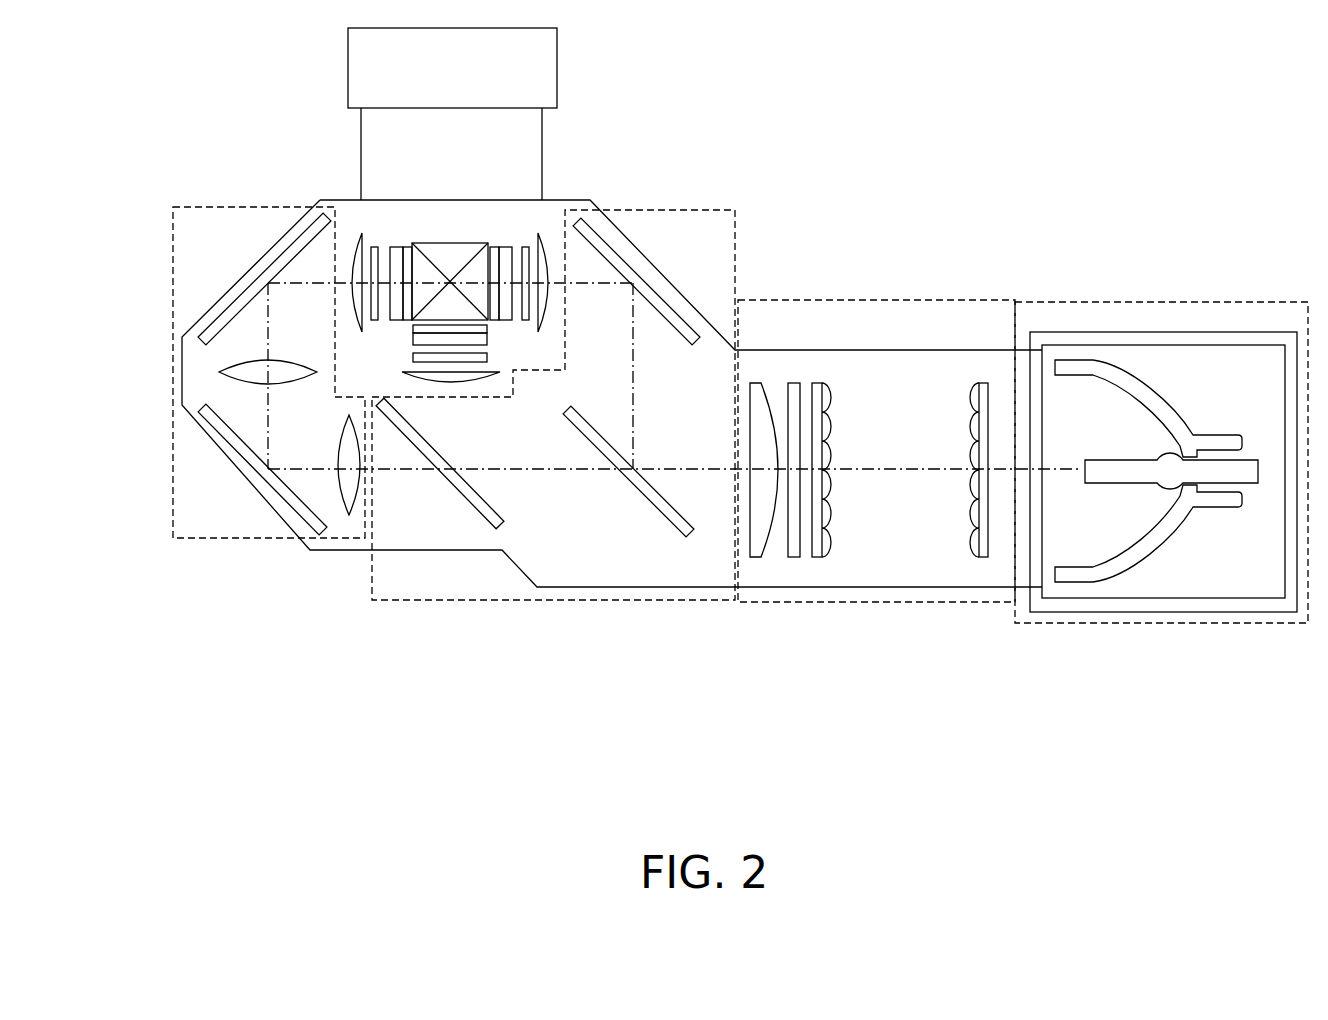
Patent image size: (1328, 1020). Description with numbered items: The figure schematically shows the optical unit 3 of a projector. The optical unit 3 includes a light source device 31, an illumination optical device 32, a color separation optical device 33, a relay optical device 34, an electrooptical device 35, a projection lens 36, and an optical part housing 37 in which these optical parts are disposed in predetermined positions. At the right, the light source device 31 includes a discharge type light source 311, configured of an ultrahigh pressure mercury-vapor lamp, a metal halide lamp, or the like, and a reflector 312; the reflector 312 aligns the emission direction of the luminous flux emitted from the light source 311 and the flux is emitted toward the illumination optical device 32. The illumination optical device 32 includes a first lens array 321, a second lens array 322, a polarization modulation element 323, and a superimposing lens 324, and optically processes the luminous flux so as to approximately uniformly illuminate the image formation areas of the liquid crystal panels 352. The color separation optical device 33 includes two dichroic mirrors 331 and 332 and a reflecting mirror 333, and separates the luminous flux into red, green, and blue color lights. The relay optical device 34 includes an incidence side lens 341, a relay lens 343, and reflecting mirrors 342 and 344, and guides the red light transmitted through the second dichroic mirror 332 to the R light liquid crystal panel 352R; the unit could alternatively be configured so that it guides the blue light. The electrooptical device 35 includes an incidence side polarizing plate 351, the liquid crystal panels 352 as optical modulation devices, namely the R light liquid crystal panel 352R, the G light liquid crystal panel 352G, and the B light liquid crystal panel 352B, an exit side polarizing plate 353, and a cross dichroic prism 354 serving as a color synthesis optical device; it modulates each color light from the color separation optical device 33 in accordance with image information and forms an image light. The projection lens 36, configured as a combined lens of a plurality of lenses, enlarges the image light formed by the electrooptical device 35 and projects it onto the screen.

The optical unit 3 is at (928, 136).
The light source device 31 is at (1050, 623).
The light source 311 is at (1132, 476).
The reflector 312 is at (1168, 524).
The illumination optical device 32 is at (875, 602).
The first lens array 321 is at (985, 385).
The second lens array 322 is at (818, 385).
The polarization modulation element 323 is at (800, 385).
The superimposing lens 324 is at (762, 385).
The color separation optical device 33 is at (583, 600).
The dichroic mirror 331 is at (662, 512).
The second dichroic mirror 332 is at (478, 515).
The reflecting mirror 333 is at (658, 300).
The relay optical device 34 is at (178, 372).
The incidence side lens 341 is at (350, 497).
The reflecting mirror 342 is at (230, 437).
The relay lens 343 is at (282, 374).
The reflecting mirror 344 is at (250, 302).
The electrooptical device 35 is at (466, 234).
The incidence side polarizing plate 351 is at (373, 247).
The liquid crystal panel 352 is at (452, 298).
The R light liquid crystal panel 352R is at (392, 245).
The G light liquid crystal panel 352G is at (465, 338).
The B light liquid crystal panel 352B is at (508, 245).
The exit side polarizing plate 353 is at (407, 245).
The cross dichroic prism 354 is at (446, 250).
The projection lens 36 is at (540, 62).
The optical part housing 37 is at (460, 552).